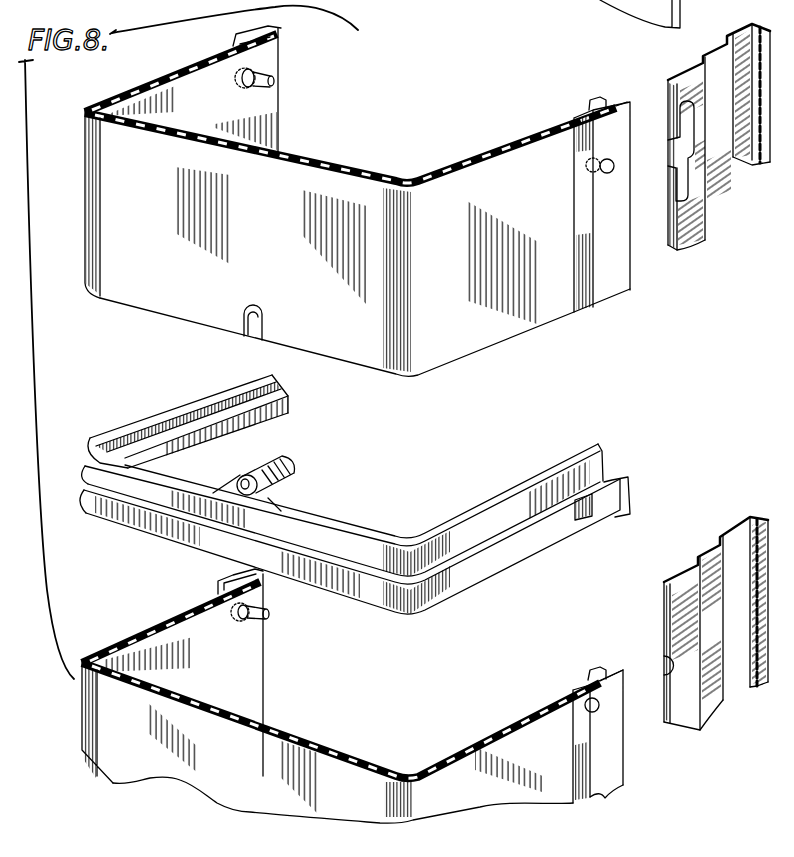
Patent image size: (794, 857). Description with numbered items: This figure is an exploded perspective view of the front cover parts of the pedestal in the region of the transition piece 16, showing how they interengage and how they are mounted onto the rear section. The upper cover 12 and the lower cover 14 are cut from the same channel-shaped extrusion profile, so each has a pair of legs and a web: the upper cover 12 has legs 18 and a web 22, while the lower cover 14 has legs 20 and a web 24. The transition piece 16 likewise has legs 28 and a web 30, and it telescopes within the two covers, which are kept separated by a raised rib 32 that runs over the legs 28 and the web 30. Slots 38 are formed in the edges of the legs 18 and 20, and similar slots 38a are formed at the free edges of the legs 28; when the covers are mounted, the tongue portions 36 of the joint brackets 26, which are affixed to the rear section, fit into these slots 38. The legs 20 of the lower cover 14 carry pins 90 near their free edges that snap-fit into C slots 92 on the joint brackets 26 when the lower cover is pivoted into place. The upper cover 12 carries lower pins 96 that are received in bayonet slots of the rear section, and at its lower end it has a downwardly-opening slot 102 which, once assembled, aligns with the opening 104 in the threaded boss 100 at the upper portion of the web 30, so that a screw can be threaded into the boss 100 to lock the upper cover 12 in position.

The upper cover 12 is at (414, 380).
The lower cover 14 is at (80, 722).
The transition piece 16 is at (523, 485).
The legs 18 is at (160, 68).
The legs 20 is at (98, 648).
The web 22 is at (100, 293).
The web 24 is at (246, 787).
The joint brackets 26 is at (737, 162).
The legs 28 is at (130, 427).
The web 30 is at (147, 530).
The raised rib 32 is at (440, 580).
The tongue portions 36 is at (700, 237).
The slots 38 is at (272, 28).
The slots 38a is at (613, 480).
The pins 90 is at (270, 617).
The C slots 92 is at (672, 668).
The lower pins 96 is at (278, 84).
The threaded boss 100 is at (290, 460).
The downwardly-opening slot 102 is at (252, 335).
The opening 104 is at (294, 477).